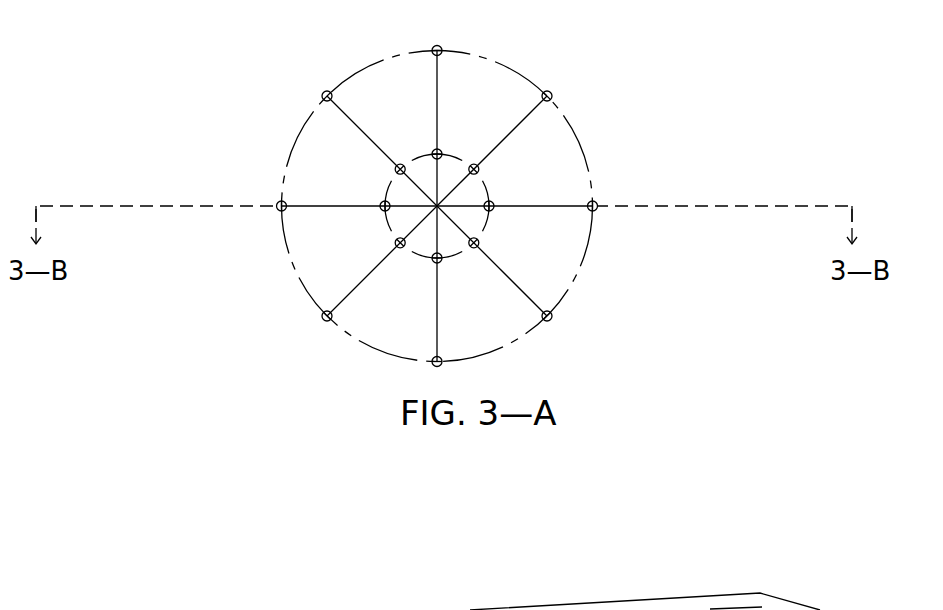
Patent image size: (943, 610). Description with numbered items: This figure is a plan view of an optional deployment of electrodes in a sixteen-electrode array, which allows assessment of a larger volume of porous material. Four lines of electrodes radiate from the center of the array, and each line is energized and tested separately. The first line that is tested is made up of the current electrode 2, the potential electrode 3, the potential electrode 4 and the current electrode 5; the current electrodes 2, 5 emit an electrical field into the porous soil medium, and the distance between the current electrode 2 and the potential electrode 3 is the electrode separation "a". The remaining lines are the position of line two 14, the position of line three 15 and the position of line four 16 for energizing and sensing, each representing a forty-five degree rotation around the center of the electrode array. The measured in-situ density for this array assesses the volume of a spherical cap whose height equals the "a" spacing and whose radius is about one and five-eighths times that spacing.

The current electrode 2 is at (277, 202).
The potential electrode 3 is at (380, 203).
The potential electrode 4 is at (493, 199).
The current electrode 5 is at (596, 202).
The position of line two 14 is at (525, 120).
The position of line three 15 is at (438, 87).
The position of line four 16 is at (345, 122).